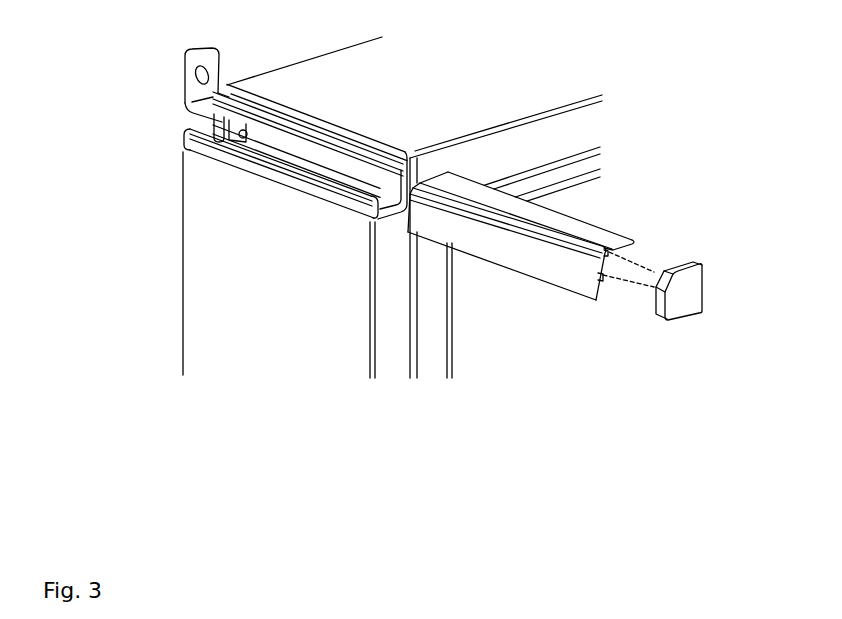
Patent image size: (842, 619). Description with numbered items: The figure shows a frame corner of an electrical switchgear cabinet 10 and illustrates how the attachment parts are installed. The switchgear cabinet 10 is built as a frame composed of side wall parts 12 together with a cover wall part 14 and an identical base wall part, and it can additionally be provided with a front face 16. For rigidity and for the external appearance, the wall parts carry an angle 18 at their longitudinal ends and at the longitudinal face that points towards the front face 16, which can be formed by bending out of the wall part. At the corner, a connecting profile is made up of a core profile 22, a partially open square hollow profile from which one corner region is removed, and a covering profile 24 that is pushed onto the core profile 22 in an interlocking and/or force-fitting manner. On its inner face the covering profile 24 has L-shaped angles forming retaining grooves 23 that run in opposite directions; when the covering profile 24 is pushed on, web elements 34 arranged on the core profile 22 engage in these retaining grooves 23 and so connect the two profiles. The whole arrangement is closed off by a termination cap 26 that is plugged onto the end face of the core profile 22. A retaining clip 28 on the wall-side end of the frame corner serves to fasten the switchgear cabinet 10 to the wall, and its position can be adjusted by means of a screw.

The electrical switchgear cabinet 10 is at (566, 427).
The side wall part 12 is at (287, 326).
The cover wall part 14 is at (416, 131).
The front face 16 is at (511, 302).
The angle 18 is at (590, 122).
The core profile 22 is at (186, 131).
The retaining grooves 23 is at (606, 256).
The covering profile 24 is at (507, 257).
The termination cap 26 is at (693, 283).
The retaining clip 28 is at (188, 72).
The web elements 34 is at (318, 138).